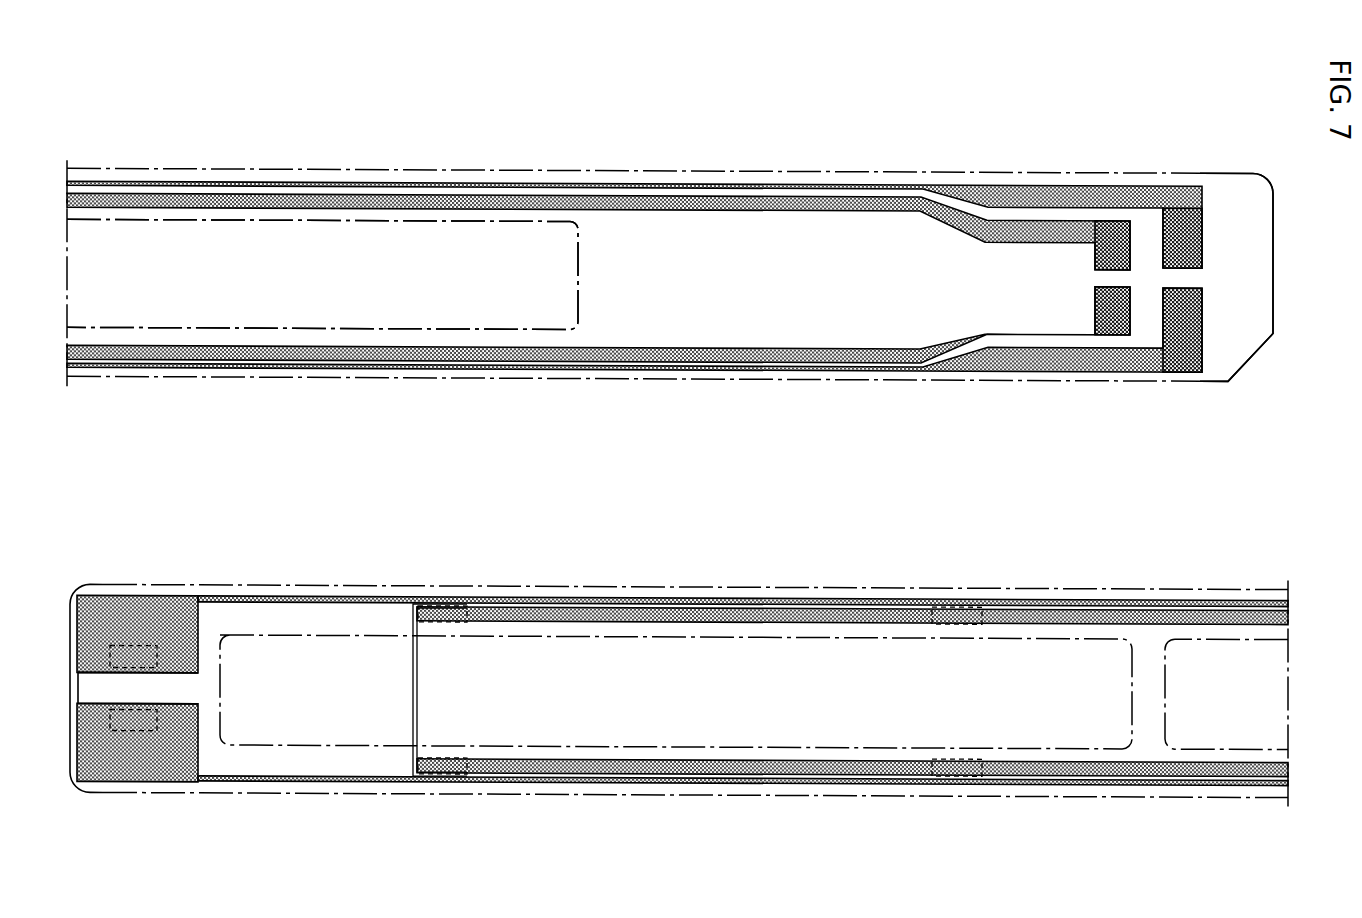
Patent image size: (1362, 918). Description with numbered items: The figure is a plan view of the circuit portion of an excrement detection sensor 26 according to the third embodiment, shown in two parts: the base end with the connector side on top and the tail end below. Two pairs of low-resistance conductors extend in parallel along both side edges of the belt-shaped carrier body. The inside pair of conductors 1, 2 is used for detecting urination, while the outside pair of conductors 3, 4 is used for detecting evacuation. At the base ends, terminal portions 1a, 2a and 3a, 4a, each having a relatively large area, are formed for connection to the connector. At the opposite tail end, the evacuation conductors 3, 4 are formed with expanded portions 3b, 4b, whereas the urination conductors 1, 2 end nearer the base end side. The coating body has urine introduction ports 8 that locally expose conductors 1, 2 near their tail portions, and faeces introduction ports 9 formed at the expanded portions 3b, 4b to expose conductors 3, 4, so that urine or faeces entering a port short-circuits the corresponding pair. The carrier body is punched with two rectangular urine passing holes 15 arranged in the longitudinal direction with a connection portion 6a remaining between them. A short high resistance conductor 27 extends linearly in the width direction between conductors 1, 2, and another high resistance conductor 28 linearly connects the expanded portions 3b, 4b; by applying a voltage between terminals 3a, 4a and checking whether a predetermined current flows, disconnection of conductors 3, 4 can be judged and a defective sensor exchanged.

The conductor 1 is at (312, 193).
The terminal portion 1a is at (1109, 229).
The conductor 2 is at (310, 360).
The terminal portion 2a is at (1112, 310).
The conductor 3 is at (407, 181).
The terminal portion 3a is at (1183, 224).
The expanded portion 3b is at (100, 612).
The conductor 4 is at (411, 368).
The terminal portion 4a is at (1182, 328).
The expanded portion 4b is at (110, 768).
The connection portion 6a is at (1165, 688).
The urine introduction port 8 is at (452, 604).
The faeces introduction port 9 is at (148, 650).
The urine passing hole 15 is at (195, 219).
The excrement detection sensor 26 is at (805, 150).
The high resistance conductor 27 is at (413, 683).
The high resistance conductor 28 is at (78, 683).